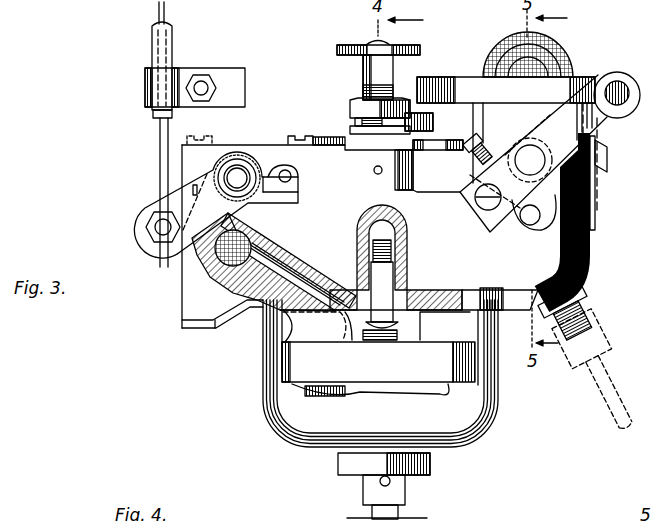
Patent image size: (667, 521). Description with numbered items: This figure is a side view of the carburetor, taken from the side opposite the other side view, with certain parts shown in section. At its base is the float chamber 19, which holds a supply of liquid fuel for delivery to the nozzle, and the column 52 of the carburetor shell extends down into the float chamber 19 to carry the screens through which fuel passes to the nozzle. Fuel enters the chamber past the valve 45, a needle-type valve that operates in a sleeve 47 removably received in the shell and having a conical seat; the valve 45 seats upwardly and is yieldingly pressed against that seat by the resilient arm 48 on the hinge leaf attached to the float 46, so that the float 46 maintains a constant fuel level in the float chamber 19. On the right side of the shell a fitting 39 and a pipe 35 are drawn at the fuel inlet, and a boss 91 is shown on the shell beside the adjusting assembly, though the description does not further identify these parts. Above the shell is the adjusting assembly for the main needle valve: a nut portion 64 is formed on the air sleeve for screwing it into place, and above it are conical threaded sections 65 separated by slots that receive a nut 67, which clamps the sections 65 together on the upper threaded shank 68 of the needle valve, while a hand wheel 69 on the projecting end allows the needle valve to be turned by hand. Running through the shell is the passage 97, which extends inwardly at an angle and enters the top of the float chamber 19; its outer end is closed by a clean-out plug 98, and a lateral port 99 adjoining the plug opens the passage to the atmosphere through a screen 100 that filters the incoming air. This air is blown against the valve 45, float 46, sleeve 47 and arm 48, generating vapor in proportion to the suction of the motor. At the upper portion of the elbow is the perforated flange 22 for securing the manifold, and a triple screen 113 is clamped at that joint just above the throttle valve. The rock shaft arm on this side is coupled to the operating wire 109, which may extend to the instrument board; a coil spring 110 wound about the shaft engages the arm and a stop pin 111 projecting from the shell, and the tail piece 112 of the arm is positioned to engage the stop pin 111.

The operating wire 109 is at (160, 151).
The coil spring 110 is at (268, 170).
The stop pin 111 is at (299, 176).
The tail piece 112 is at (299, 193).
The clean-out plug 98 is at (236, 218).
The screen 100 is at (262, 236).
The passage 97 is at (288, 272).
The lateral port 99 is at (212, 275).
The hand wheel 69 is at (347, 44).
The threaded shank 68 is at (368, 83).
The nut 67 is at (356, 101).
The conical threaded sections 65 is at (352, 122).
The nut portion 64 is at (350, 133).
The boss 91 is at (446, 148).
The triple screen 113 is at (560, 58).
The perforated flange 22 is at (578, 77).
The sleeve 47 is at (392, 276).
The resilient arm 48 is at (412, 297).
The valve 45 is at (352, 322).
The float 46 is at (320, 366).
The float chamber 19 is at (270, 430).
The column 52 is at (343, 390).
The fuel inlet fitting 39 is at (590, 297).
The fuel pipe 35 is at (612, 387).